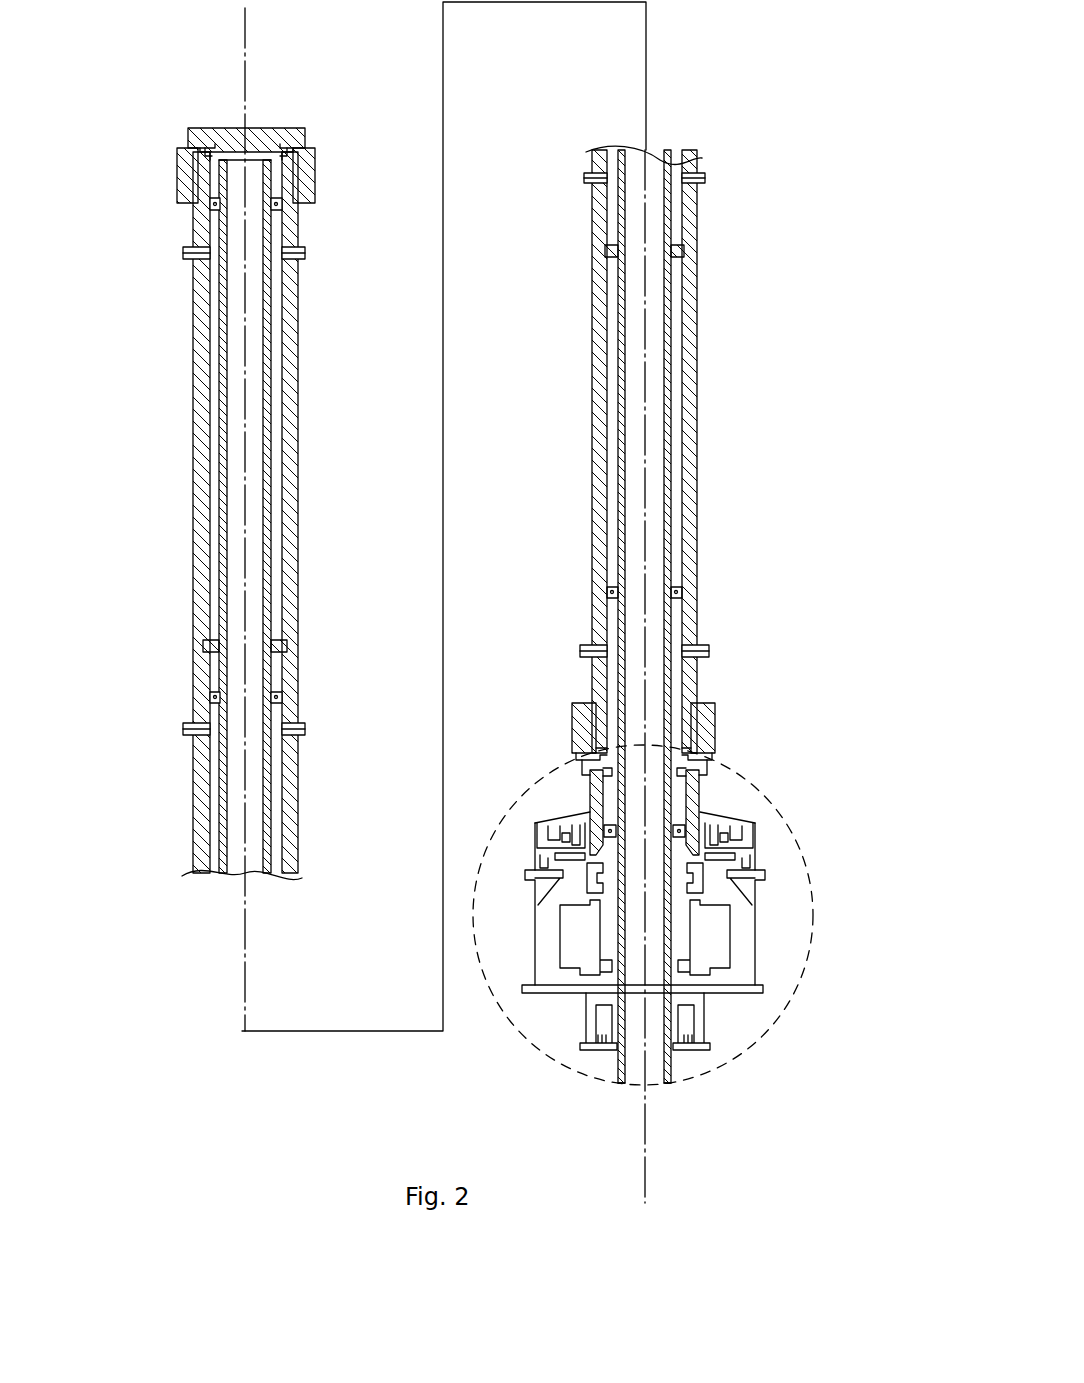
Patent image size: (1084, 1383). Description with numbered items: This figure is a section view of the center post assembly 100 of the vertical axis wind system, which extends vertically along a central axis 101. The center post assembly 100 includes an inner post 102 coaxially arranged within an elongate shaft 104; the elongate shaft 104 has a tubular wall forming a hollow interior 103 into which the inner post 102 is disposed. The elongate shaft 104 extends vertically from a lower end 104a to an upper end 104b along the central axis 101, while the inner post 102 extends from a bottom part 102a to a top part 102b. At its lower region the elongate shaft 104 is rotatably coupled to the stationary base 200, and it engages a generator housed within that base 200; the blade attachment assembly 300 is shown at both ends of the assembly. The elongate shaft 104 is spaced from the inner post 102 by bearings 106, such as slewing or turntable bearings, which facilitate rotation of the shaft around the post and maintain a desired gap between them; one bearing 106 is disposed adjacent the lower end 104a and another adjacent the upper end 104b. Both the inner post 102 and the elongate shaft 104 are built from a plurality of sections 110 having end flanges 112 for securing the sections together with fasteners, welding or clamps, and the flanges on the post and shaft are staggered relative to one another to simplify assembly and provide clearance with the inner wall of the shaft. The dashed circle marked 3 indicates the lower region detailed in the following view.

The center post assembly 100 is at (469, 464).
The central axis 101 is at (247, 50).
The inner post 102 is at (670, 323).
The bottom part 102a is at (615, 1058).
The top part 102b is at (272, 175).
The hollow interior 103 is at (278, 325).
The elongate shaft 104 is at (695, 413).
The lower end 104a is at (588, 800).
The upper end 104b is at (193, 283).
The bearing 106 is at (279, 205).
The section 110 is at (176, 516).
The end flange 112 is at (220, 603).
The stationary base 200 is at (822, 815).
The blade attachment assembly 300 is at (160, 118).
The detail section circle 3 is at (783, 1020).